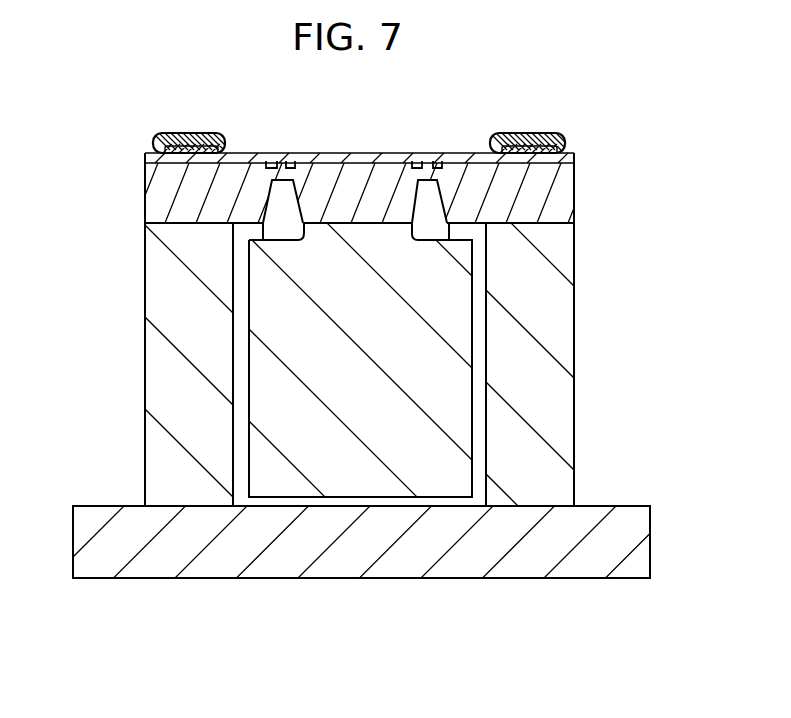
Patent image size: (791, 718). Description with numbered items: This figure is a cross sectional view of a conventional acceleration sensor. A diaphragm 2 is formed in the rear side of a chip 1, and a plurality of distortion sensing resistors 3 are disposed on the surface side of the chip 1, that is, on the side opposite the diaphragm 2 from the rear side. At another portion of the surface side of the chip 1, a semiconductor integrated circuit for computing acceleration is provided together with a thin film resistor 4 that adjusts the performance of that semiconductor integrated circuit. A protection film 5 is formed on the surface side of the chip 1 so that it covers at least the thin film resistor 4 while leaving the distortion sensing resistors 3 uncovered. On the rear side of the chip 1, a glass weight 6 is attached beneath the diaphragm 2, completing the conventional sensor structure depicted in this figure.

The chip 1 is at (155, 200).
The diaphragm 2 is at (425, 205).
The distortion sensing resistors 3 is at (289, 161).
The thin film resistor 4 is at (155, 147).
The protection film 5 is at (192, 133).
The glass weight 6 is at (288, 352).